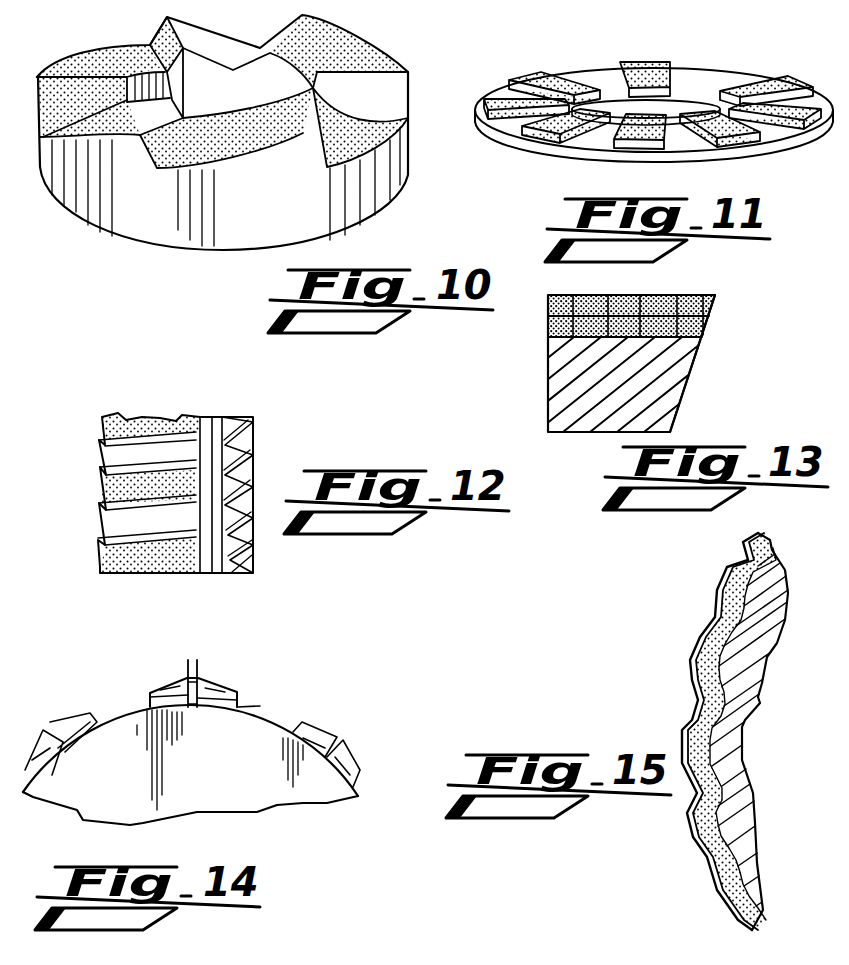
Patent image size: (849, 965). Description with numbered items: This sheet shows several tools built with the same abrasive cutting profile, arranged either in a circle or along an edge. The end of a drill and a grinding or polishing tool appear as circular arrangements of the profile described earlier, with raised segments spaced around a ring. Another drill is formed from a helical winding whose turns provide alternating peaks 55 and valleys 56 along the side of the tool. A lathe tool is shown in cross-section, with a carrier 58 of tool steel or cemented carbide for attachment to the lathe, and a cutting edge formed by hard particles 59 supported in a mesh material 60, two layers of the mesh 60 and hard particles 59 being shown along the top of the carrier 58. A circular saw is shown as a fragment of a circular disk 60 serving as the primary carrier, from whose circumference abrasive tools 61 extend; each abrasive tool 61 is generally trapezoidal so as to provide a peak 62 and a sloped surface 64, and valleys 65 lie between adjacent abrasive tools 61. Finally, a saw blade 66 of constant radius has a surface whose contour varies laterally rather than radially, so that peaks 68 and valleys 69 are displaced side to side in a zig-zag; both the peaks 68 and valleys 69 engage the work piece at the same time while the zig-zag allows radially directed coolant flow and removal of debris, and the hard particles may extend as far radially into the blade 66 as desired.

In FIG. 12, the peaks 55 is at (102, 440).
In FIG. 12, the valleys 56 is at (102, 488).
In FIG. 13, the carrier 58 is at (563, 414).
In FIG. 13, the hard particles 59 is at (690, 337).
In FIG. 13, the mesh material 60 is at (580, 338).
In FIG. 14, the mesh material 60 is at (302, 788).
In FIG. 14, the abrasive tools 61 is at (243, 697).
In FIG. 14, the peak 62 is at (187, 672).
In FIG. 14, the sloped surface 64 is at (197, 700).
In FIG. 14, the valleys 65 is at (266, 722).
In FIG. 15, the saw blade 66 is at (766, 705).
In FIG. 15, the peaks 68 is at (688, 647).
In FIG. 15, the valleys 69 is at (713, 618).